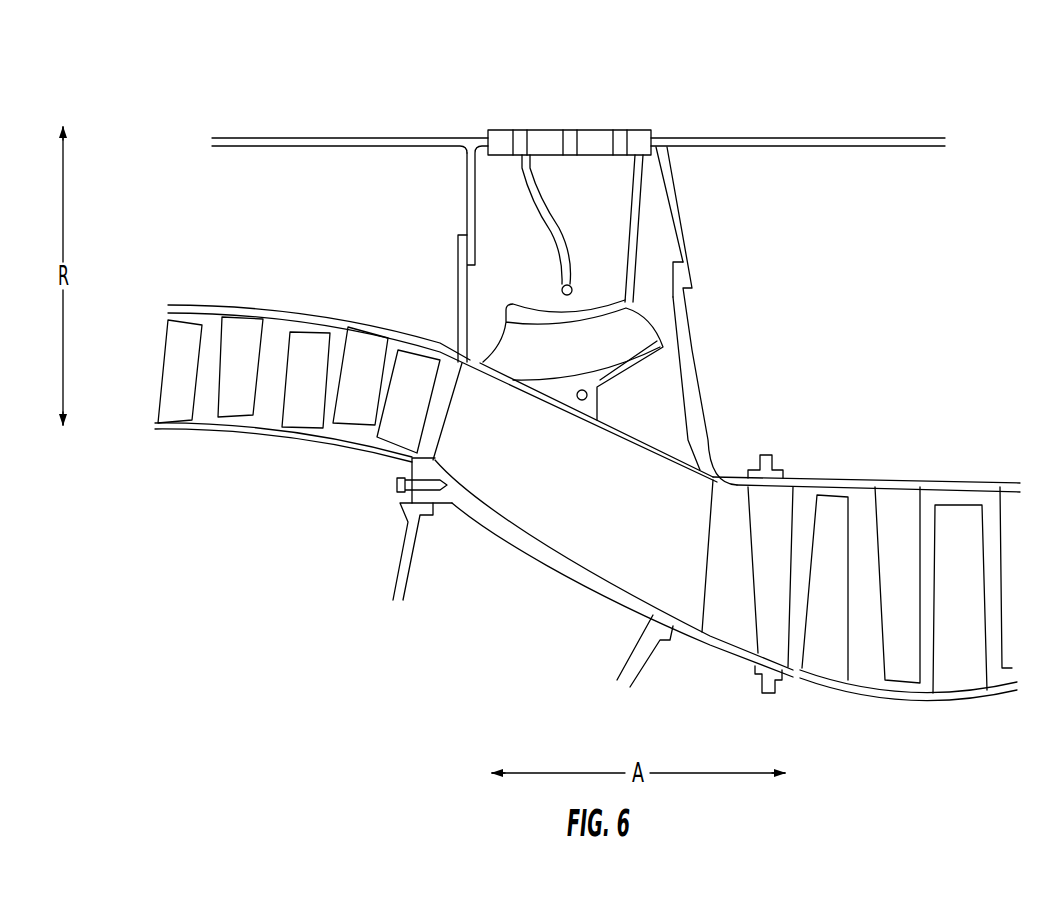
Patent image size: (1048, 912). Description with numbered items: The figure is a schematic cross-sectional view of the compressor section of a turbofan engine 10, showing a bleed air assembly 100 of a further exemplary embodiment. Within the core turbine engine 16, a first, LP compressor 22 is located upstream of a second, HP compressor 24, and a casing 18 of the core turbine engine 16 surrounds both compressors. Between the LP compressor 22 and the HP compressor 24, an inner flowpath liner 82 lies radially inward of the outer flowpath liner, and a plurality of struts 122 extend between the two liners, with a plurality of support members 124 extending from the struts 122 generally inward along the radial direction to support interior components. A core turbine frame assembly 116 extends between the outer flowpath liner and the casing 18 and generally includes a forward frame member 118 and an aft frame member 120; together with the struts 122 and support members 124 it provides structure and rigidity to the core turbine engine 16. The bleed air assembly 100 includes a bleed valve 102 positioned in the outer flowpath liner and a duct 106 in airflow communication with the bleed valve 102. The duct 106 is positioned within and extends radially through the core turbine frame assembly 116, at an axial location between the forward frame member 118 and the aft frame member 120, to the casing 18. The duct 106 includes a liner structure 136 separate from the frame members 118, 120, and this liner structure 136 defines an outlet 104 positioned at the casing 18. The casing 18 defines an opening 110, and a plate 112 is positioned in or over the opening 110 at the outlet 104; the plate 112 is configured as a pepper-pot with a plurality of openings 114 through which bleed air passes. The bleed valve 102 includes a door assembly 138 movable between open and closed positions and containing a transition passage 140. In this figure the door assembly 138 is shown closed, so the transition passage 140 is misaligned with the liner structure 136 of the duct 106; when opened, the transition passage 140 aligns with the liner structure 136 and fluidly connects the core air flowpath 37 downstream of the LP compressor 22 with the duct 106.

The turbofan engine 10 is at (821, 70).
The core turbine engine 16 is at (762, 80).
The casing 18 is at (338, 137).
The LP compressor 22 is at (240, 281).
The HP compressor 24 is at (917, 458).
The core air flowpath 37 is at (567, 536).
The inner flowpath liner 82 is at (523, 537).
The bleed air assembly 100 is at (492, 208).
The bleed valve 102 is at (651, 392).
The outlet 104 is at (606, 117).
The duct 106 is at (631, 210).
The opening 110 is at (497, 129).
The plate 112 is at (645, 130).
The openings 114 is at (569, 129).
The core turbine frame assembly 116 is at (749, 247).
The forward frame member 118 is at (457, 252).
The aft frame member 120 is at (690, 330).
The struts 122 is at (600, 567).
The support members 124 is at (400, 572).
The liner structure 136 is at (643, 222).
The door assembly 138 is at (543, 415).
The transition passage 140 is at (620, 341).